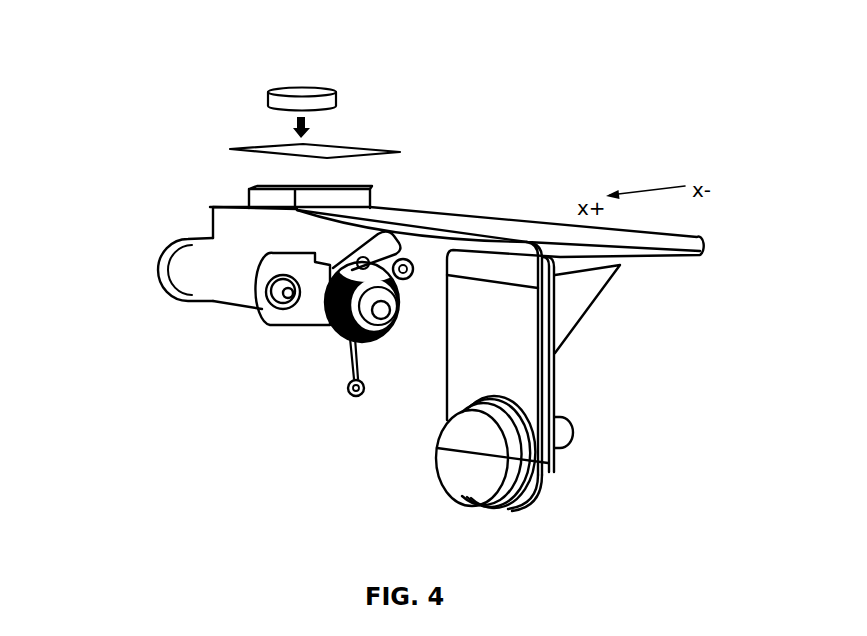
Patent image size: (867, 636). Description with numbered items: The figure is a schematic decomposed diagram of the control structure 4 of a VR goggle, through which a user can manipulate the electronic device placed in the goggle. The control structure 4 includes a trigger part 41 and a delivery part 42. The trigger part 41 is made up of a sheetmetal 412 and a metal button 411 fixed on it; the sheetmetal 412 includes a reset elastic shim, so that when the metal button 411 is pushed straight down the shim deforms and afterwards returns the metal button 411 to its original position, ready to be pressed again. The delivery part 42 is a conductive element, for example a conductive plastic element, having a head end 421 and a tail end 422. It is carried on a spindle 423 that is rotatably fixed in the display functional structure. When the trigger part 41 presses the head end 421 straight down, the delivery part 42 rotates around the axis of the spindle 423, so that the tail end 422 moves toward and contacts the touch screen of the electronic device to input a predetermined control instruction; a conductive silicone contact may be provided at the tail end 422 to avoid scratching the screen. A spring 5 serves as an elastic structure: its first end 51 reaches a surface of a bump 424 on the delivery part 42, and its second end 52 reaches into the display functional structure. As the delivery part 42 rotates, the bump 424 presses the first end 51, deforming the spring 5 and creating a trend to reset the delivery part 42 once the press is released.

The control structure 4 is at (523, 178).
The trigger part 41 is at (408, 52).
The metal button 411 is at (320, 103).
The sheetmetal 412 is at (327, 155).
The delivery part 42 is at (515, 357).
The head end 421 is at (250, 187).
The tail end 422 is at (480, 480).
The spindle 423 is at (262, 312).
The bump 424 is at (390, 254).
The spring 5 is at (352, 340).
The first end 51 is at (400, 282).
The second end 52 is at (348, 396).